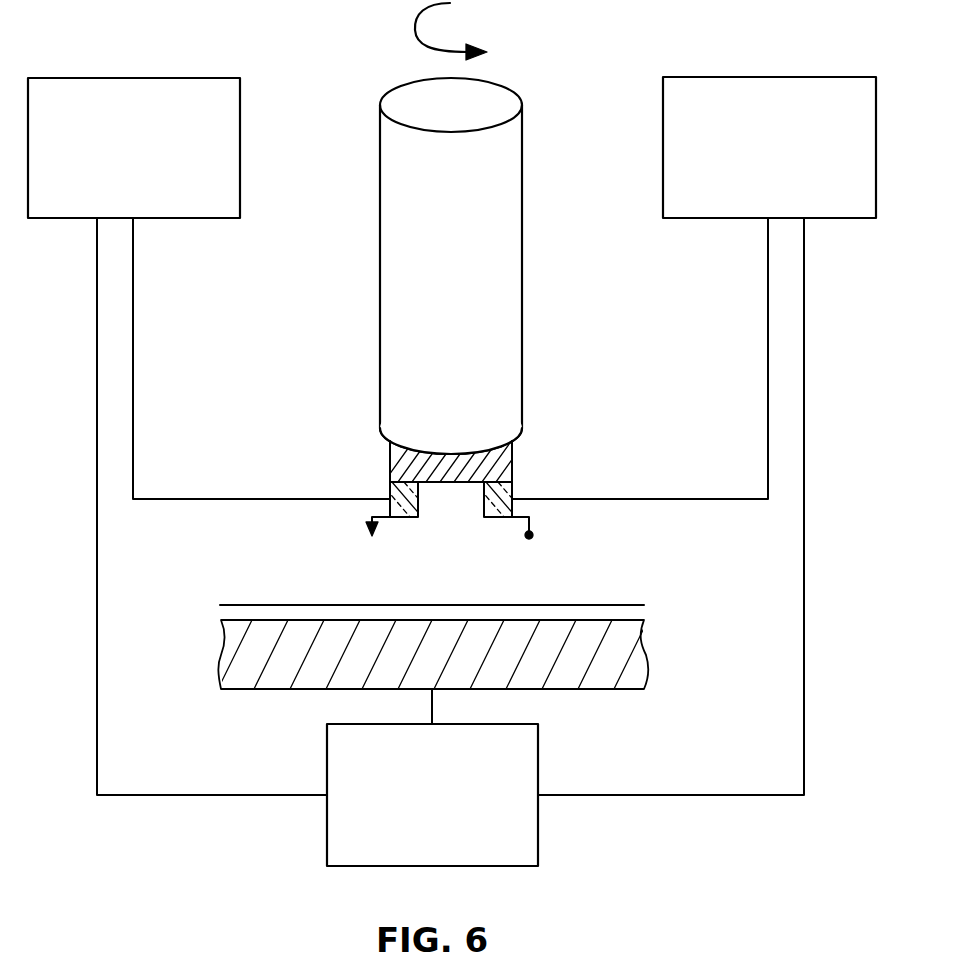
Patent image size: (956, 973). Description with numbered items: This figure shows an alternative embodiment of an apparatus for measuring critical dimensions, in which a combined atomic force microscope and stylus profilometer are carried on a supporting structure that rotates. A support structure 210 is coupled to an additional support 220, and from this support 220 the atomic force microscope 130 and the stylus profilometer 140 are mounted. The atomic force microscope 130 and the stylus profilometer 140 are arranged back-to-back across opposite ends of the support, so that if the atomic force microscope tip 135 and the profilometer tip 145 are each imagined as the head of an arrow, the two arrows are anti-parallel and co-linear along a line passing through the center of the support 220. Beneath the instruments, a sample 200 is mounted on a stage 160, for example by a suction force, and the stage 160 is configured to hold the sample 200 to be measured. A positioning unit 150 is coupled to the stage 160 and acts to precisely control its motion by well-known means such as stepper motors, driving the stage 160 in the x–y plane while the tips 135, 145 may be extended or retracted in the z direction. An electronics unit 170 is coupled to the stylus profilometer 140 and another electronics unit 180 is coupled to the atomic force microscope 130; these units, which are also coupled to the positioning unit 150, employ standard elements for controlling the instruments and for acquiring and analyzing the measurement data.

The atomic force microscope 130 is at (421, 503).
The atomic force microscope tip 135 is at (363, 536).
The stylus profilometer 140 is at (497, 517).
The tip 145 is at (536, 536).
The positioning unit 150 is at (413, 819).
The stage 160 is at (635, 648).
The electronics unit 170 is at (750, 174).
The electronics unit 180 is at (115, 174).
The sample 200 is at (626, 598).
The support structure 210 is at (471, 247).
The additional support 220 is at (502, 472).